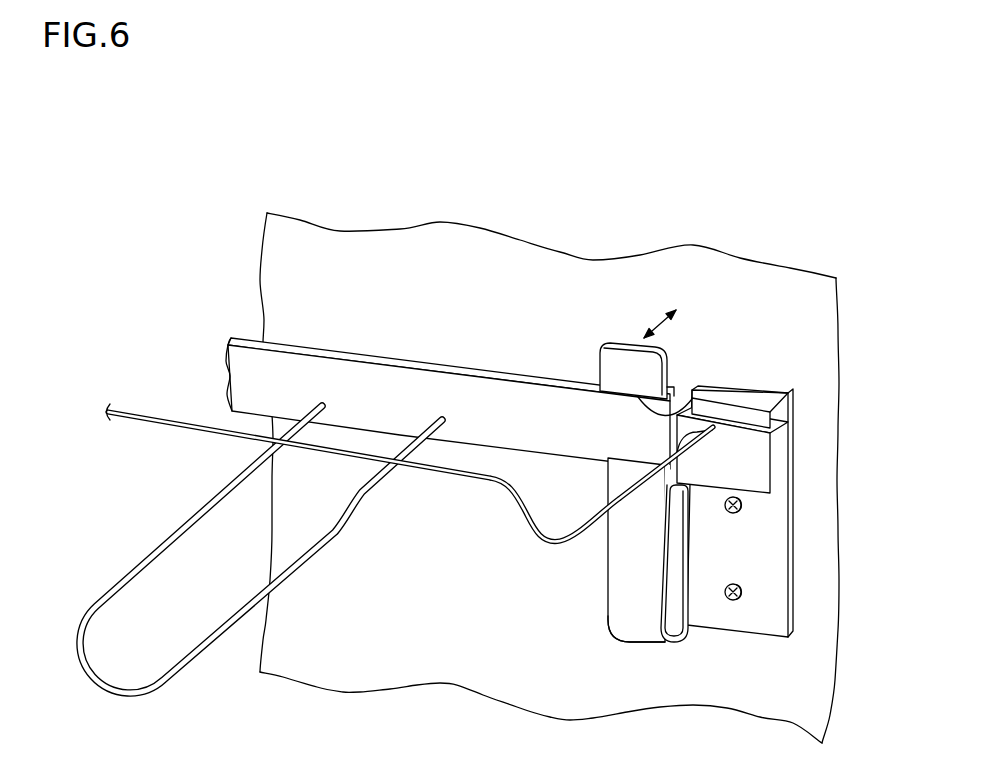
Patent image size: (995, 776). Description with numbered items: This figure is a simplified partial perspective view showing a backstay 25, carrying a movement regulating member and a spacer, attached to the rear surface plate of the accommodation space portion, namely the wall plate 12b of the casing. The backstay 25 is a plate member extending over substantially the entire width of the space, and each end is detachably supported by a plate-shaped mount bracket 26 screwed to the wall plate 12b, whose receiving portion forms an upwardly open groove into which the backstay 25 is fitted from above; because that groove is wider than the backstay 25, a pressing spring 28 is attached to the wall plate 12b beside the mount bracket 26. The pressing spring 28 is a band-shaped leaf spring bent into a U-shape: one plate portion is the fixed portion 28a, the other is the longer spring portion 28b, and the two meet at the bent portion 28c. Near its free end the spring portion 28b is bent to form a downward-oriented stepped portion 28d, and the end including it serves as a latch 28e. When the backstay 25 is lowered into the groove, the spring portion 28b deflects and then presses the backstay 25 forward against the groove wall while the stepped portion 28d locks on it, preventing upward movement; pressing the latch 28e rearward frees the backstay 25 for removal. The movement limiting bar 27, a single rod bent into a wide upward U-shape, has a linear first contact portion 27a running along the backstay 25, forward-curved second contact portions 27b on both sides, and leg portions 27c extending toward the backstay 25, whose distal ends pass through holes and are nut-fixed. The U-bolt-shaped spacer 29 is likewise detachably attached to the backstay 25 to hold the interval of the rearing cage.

The wall plate 12b is at (462, 256).
The backstay 25 is at (259, 368).
The mount bracket 26 is at (772, 543).
The movement limiting bar 27 is at (410, 502).
The first contact portion 27a is at (183, 429).
The second contact portion 27b is at (542, 543).
The leg portion 27c is at (647, 470).
The pressing spring 28 is at (641, 503).
The fixed portion 28a is at (676, 588).
The spring portion 28b is at (623, 479).
The bent portion 28c is at (645, 643).
The stepped portion 28d is at (695, 400).
The latch 28e is at (618, 372).
The spacer 29 is at (104, 604).